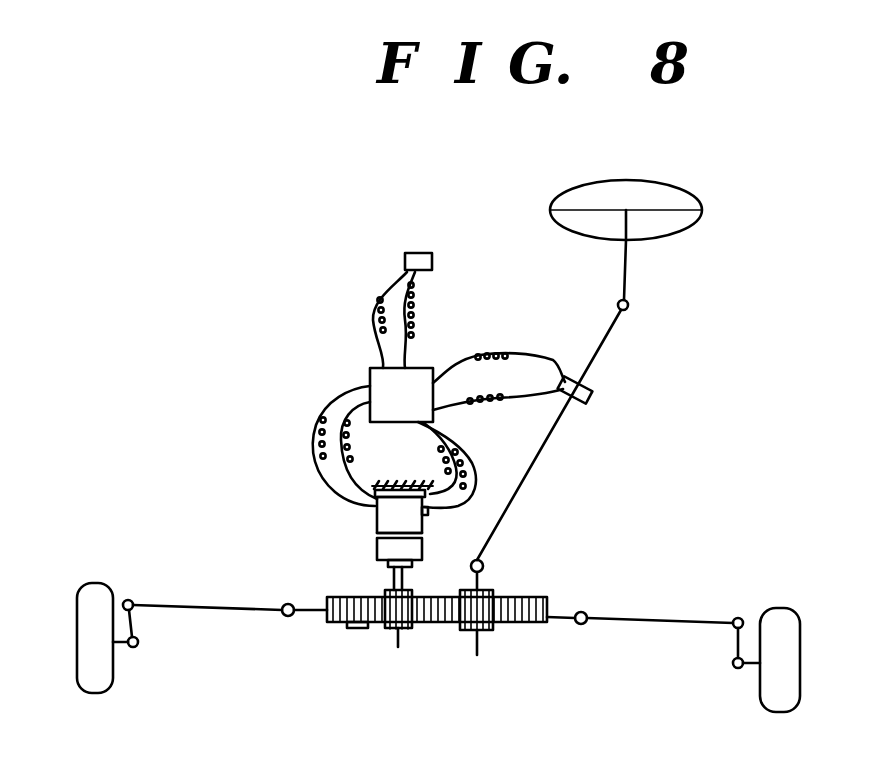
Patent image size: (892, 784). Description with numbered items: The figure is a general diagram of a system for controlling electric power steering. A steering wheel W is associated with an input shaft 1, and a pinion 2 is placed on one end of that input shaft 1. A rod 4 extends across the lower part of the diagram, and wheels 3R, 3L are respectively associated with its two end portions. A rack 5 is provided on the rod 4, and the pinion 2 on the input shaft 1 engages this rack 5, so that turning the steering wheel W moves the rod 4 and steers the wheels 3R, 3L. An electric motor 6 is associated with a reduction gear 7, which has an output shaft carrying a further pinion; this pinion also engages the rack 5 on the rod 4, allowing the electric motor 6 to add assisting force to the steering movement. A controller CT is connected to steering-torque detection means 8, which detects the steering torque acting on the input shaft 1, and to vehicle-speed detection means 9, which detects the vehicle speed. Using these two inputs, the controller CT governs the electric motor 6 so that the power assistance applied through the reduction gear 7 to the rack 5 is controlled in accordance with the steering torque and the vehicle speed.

The steering wheel W is at (702, 222).
The input shaft 1 is at (553, 461).
The pinion 2 is at (472, 631).
The wheel 3R is at (96, 693).
The wheel 3L is at (776, 712).
The rod 4 is at (541, 603).
The rack 5 is at (520, 626).
The electric motor 6 is at (375, 523).
The reduction gear 7 is at (377, 548).
The steering-torque detection means 8 is at (598, 384).
The vehicle-speed detection means 9 is at (417, 252).
The controller CT is at (433, 368).